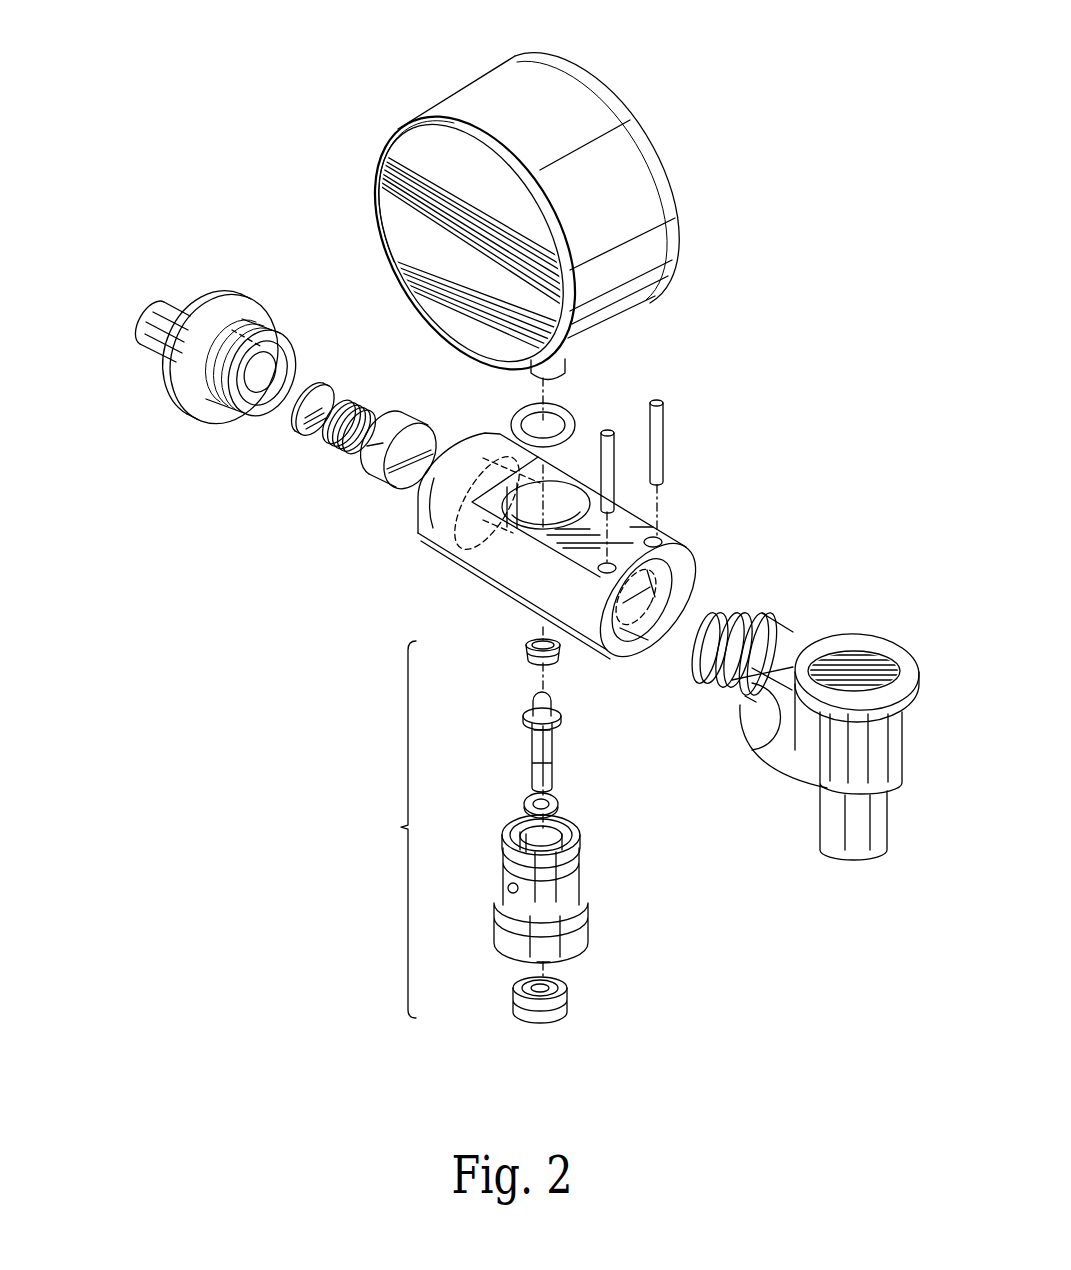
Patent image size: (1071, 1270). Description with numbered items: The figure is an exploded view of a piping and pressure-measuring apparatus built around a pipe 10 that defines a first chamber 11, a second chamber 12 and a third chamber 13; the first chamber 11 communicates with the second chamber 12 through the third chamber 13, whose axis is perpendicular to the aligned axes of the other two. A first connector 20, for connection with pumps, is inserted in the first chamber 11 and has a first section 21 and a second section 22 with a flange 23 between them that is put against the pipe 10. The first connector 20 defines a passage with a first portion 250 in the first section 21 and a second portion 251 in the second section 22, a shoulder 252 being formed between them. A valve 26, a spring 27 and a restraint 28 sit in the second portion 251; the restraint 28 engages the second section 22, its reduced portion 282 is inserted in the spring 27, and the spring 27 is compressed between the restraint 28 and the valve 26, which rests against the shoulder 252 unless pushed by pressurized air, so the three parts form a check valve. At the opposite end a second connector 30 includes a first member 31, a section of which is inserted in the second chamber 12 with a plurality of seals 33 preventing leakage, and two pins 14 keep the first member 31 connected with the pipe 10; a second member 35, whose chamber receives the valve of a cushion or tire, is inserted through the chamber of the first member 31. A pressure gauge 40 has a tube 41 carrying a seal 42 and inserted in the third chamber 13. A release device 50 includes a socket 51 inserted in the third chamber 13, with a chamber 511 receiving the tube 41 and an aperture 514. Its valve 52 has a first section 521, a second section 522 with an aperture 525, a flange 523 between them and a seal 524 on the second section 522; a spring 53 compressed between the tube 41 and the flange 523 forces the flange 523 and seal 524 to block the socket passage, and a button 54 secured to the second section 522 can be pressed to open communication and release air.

The pipe 10 is at (506, 539).
The first chamber 11 is at (440, 562).
The second chamber 12 is at (665, 565).
The third chamber 13 is at (510, 487).
The pins 14 is at (653, 457).
The first connector 20 is at (193, 337).
The first section 21 is at (150, 300).
The second section 22 is at (213, 356).
The flange 23 is at (173, 397).
The first portion 250 is at (153, 337).
The second portion 251 is at (257, 375).
The shoulder 252 is at (227, 407).
The valve 26 is at (320, 390).
The spring 27 is at (340, 420).
The restraint 28 is at (388, 440).
The reduced portion 282 is at (387, 447).
The second connector 30 is at (811, 683).
The first member 31 is at (717, 610).
The seals 33 is at (732, 686).
The second member 35 is at (807, 660).
The pressure gauge 40 is at (537, 231).
The tube 41 is at (550, 363).
The seal 42 is at (562, 408).
The release device 50 is at (515, 827).
The socket 51 is at (547, 889).
The chamber 511 is at (547, 840).
The aperture 514 is at (518, 887).
The valve 52 is at (548, 745).
The first section 521 is at (530, 708).
The second section 522 is at (553, 753).
The flange 523 is at (562, 718).
The seal 524 is at (557, 805).
The aperture 525 is at (533, 733).
The spring 53 is at (560, 657).
The button 54 is at (567, 1003).